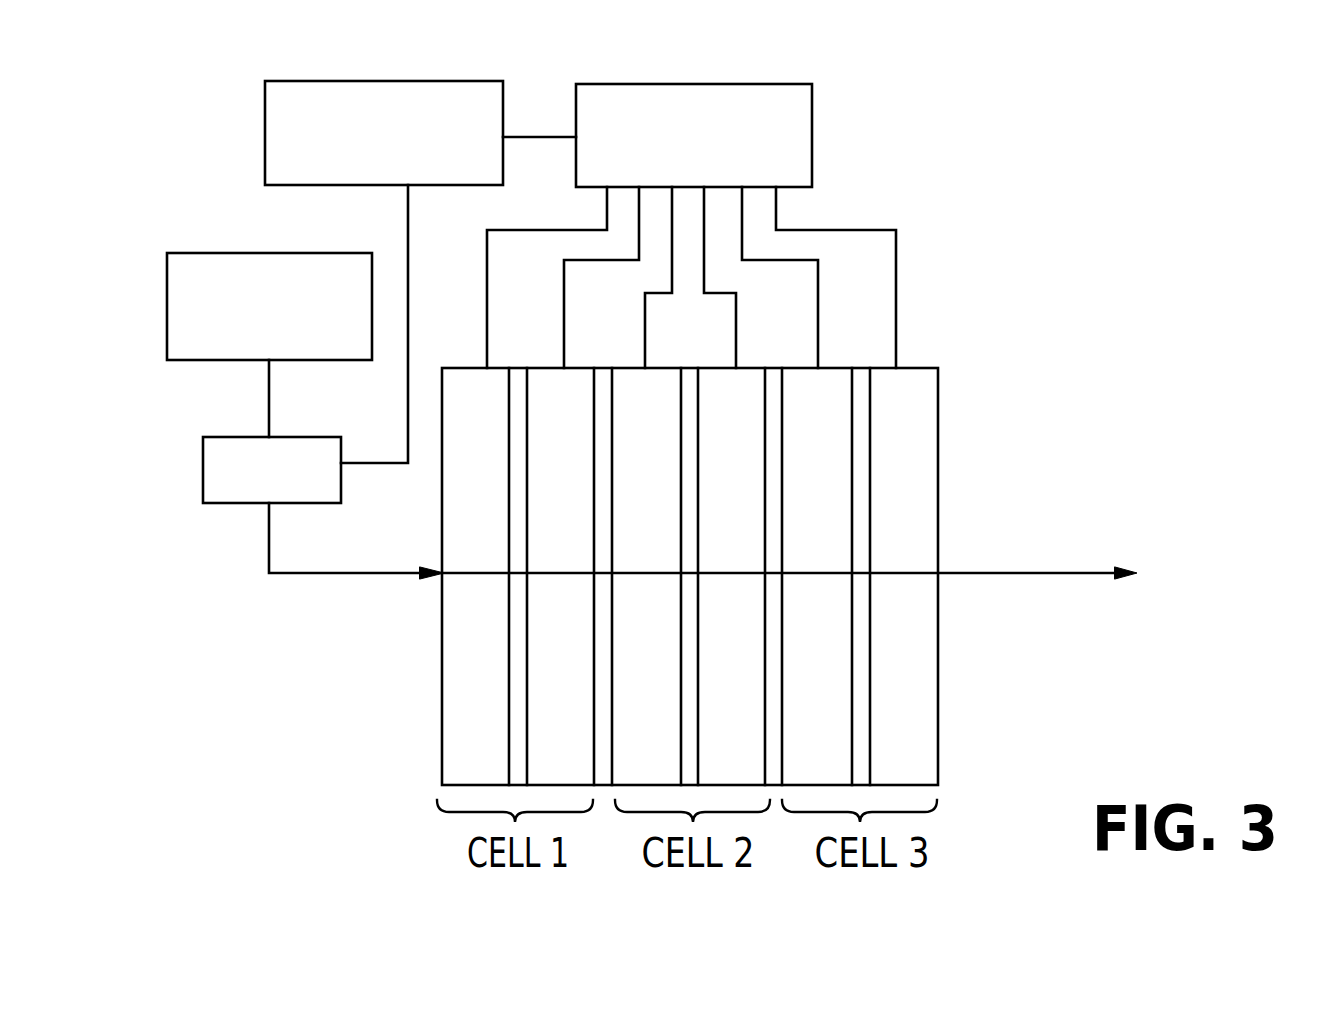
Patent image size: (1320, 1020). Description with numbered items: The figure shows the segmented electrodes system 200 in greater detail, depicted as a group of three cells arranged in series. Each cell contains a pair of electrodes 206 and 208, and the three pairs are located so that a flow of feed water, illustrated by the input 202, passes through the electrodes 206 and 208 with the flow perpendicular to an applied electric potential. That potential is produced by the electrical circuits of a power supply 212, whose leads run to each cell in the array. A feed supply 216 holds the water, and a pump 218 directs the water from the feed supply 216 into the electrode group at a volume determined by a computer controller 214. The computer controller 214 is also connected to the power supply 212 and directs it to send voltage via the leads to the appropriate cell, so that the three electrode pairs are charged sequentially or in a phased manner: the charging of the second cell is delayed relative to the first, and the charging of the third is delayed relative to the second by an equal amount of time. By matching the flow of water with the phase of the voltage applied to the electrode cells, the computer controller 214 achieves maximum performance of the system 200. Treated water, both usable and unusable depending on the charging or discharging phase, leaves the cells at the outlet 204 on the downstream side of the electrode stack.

The segmented electrodes system 200 is at (1029, 179).
The input 202 is at (363, 577).
The outlet 204 is at (1045, 573).
The electrode 206 is at (492, 672).
The electrode 208 is at (572, 672).
The power supply 212 is at (813, 148).
The computer controller 214 is at (265, 132).
The feed supply 216 is at (202, 362).
The pump 218 is at (230, 505).